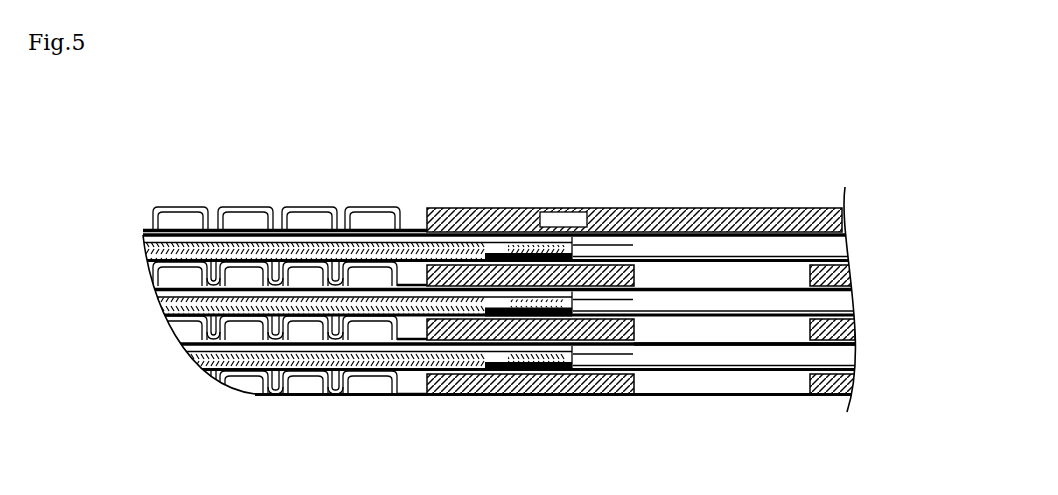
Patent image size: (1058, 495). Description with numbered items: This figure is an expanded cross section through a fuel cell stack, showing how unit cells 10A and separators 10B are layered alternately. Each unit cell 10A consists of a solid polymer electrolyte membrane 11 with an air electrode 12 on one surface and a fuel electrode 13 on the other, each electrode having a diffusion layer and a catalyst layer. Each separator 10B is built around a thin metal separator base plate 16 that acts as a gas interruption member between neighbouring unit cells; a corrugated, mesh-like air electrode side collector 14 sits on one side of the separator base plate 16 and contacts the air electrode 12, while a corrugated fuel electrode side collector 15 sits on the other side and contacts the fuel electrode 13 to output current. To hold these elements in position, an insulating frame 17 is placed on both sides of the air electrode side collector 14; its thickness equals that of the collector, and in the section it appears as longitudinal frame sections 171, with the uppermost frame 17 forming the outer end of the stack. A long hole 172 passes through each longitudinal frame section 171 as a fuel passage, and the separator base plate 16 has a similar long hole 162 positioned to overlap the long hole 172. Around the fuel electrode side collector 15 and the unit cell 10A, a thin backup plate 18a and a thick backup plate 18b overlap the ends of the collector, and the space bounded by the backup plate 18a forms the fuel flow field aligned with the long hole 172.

The unit cell 10A is at (466, 379).
The separator 10B is at (441, 295).
The solid polymer electrolyte membrane 11 is at (197, 370).
The air electrode 12 is at (212, 383).
The fuel electrode 13 is at (192, 355).
The air electrode side collector 14 is at (148, 275).
The fuel electrode side collector 15 is at (165, 307).
The separator base plate 16 is at (157, 295).
The frame 17 is at (843, 222).
The longitudinal frame section 171 is at (660, 207).
The long hole 172 is at (708, 390).
The long hole 162 is at (772, 347).
The thin backup plate 18a is at (597, 357).
The thick backup plate 18b is at (520, 395).